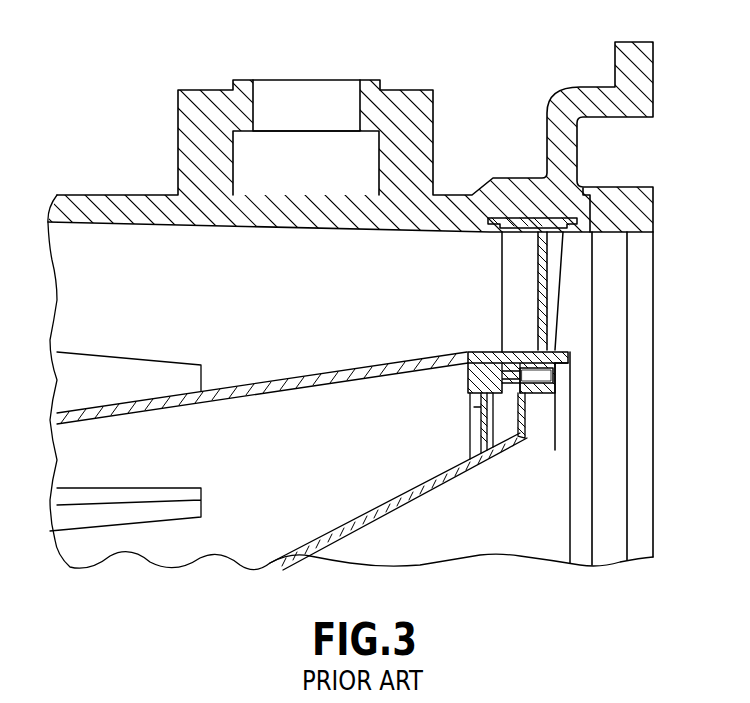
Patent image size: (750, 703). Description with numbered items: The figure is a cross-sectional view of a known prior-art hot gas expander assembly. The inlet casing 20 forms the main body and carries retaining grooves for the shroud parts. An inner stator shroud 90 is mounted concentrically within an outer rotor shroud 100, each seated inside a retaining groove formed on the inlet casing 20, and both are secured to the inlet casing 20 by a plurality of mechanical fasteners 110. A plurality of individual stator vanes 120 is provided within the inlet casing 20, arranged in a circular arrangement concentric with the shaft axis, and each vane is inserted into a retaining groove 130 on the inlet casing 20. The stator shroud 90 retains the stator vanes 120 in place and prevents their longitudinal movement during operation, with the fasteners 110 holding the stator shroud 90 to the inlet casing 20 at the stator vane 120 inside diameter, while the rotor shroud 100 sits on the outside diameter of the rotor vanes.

The inlet casing 20 is at (70, 210).
The stator shroud 90 is at (555, 377).
The rotor shroud 100 is at (642, 265).
The mechanical fasteners 110 is at (528, 373).
The stator vanes 120 is at (537, 217).
The retaining groove 130 is at (581, 548).